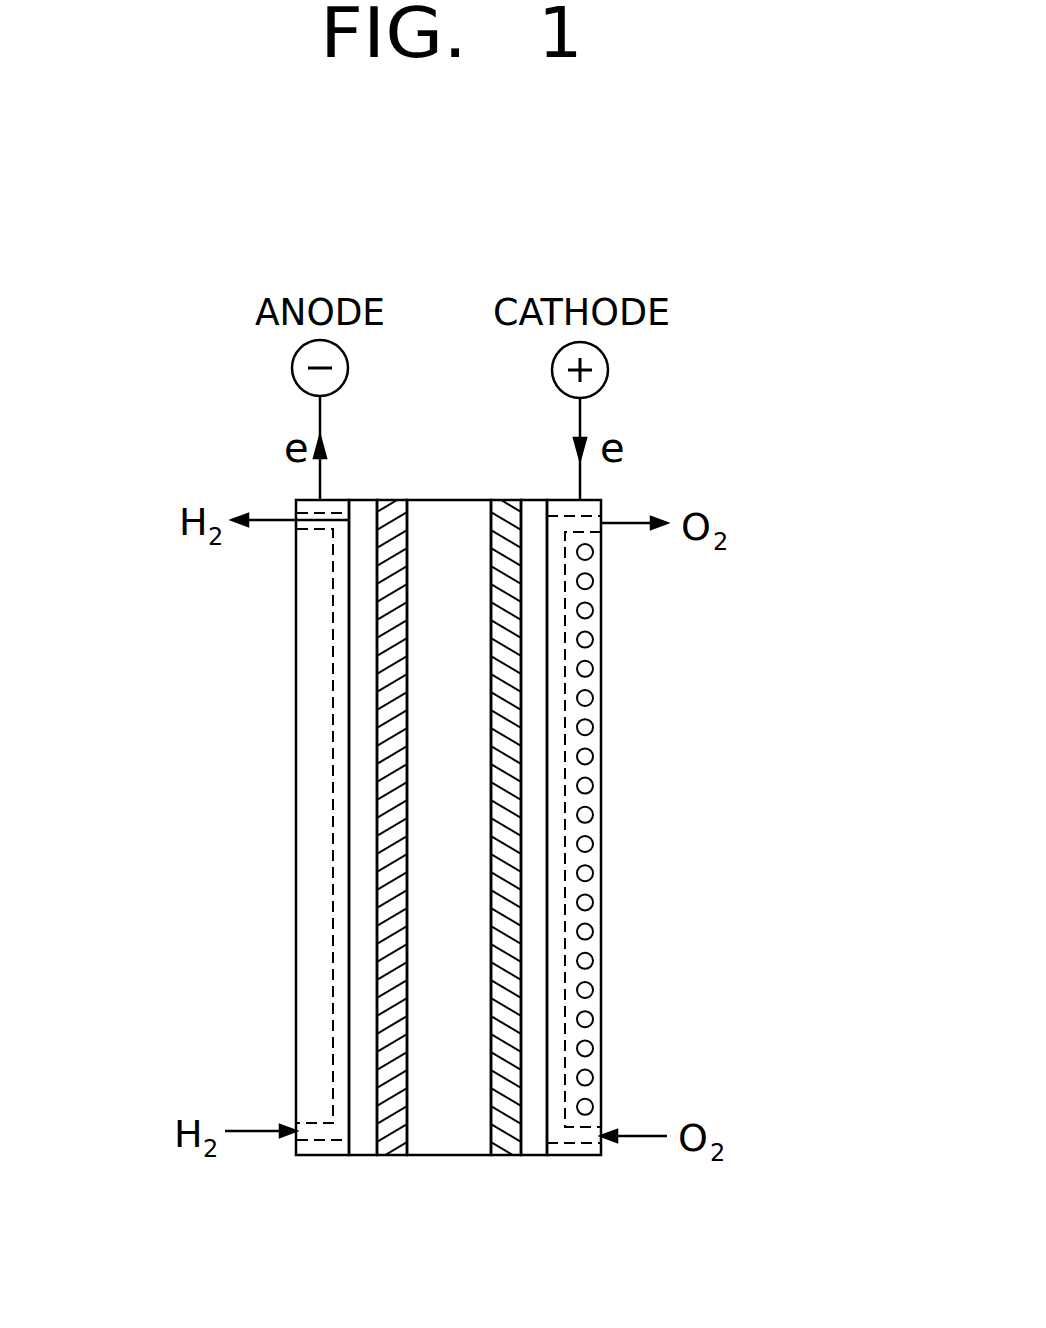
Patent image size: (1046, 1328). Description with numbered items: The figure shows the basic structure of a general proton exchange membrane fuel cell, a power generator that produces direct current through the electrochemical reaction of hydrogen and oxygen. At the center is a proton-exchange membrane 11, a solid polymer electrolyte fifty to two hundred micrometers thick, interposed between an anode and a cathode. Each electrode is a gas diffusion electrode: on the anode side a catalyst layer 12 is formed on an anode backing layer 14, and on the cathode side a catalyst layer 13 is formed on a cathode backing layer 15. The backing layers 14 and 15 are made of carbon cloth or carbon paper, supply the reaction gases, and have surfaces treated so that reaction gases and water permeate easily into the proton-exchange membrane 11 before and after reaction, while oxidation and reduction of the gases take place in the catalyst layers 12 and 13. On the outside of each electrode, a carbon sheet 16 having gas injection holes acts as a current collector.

The proton-exchange membrane 11 is at (445, 1143).
The anode catalyst layer 12 is at (382, 1157).
The cathode catalyst layer 13 is at (500, 1150).
The anode backing layer 14 is at (362, 702).
The cathode backing layer 15 is at (532, 685).
The carbon sheet 16 is at (310, 820).